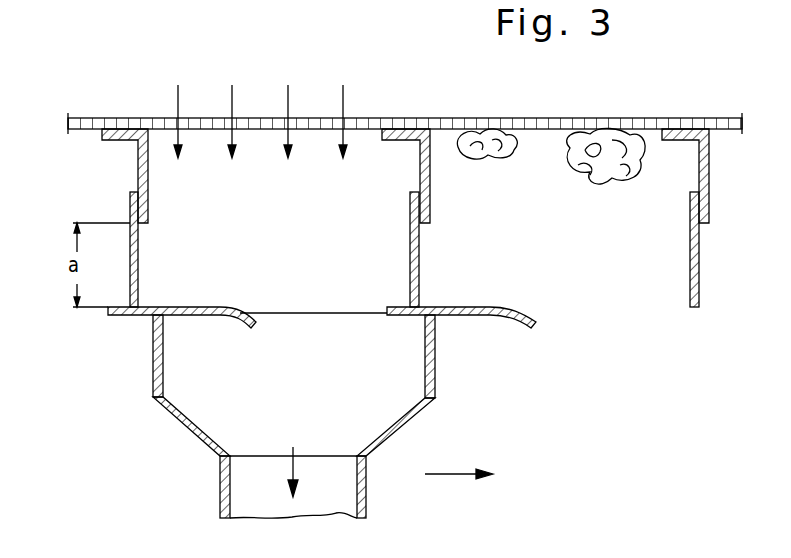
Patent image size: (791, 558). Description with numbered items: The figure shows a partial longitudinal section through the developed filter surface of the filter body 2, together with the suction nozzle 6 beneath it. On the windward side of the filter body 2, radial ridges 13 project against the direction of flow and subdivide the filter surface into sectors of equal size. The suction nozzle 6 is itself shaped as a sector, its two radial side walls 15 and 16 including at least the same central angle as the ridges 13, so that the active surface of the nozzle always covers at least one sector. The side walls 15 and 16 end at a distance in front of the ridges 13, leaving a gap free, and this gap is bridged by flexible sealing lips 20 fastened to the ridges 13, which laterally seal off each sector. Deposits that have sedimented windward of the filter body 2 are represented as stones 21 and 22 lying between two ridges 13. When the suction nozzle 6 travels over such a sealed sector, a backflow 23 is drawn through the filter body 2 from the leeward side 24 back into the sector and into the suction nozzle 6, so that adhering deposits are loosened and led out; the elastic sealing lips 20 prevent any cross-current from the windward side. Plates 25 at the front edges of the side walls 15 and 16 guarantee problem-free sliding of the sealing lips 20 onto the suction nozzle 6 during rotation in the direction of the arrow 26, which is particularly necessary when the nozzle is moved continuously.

The filter body 2 is at (550, 118).
The radial ridges 13 is at (138, 167).
The flexible sealing lips 20 is at (138, 262).
The plates 25 is at (213, 306).
The radial side wall 15 is at (153, 365).
The radial side wall 16 is at (435, 365).
The suction nozzle 6 is at (366, 497).
The backflow 23 is at (180, 100).
The leeward side 24 is at (466, 76).
The stone 21 is at (503, 156).
The stone 22 is at (605, 179).
The arrow 26 is at (445, 474).